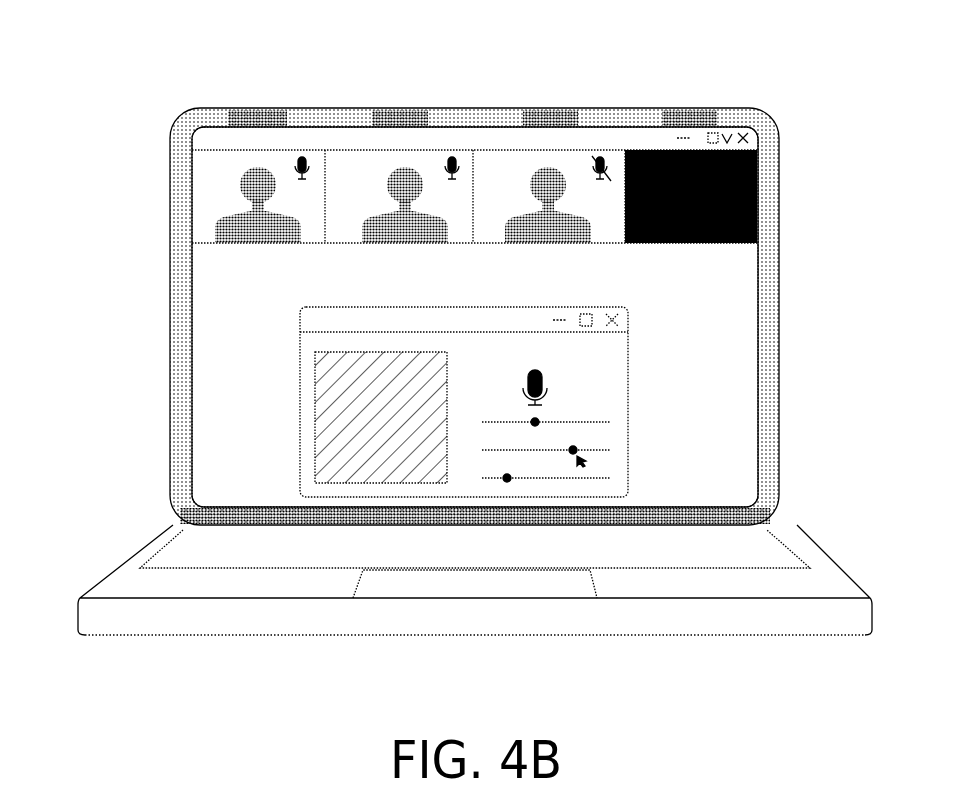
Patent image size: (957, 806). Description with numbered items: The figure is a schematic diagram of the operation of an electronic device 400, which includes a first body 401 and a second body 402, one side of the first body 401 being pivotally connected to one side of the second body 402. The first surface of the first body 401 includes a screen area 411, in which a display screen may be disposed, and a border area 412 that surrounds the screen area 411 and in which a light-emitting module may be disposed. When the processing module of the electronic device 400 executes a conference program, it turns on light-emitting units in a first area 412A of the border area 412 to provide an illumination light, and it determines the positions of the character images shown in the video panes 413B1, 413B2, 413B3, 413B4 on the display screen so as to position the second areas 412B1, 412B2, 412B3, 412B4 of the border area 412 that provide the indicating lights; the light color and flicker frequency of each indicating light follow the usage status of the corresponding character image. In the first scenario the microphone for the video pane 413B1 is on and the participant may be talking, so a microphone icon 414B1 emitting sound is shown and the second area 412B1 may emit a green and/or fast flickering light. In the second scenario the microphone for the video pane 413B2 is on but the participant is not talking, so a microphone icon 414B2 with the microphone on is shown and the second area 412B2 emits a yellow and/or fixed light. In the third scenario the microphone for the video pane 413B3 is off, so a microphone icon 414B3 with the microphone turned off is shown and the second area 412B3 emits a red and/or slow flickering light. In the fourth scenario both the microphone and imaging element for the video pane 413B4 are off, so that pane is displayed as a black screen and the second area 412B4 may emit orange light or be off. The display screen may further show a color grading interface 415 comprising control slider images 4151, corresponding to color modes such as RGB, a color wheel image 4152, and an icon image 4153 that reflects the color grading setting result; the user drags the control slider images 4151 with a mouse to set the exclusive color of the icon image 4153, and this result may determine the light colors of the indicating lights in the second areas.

The electronic device 400 is at (455, 350).
The first body 401 is at (440, 262).
The second body 402 is at (140, 535).
The screen area 411 is at (440, 253).
The border area 412 is at (465, 269).
The first area 412A is at (185, 183).
The second area 412B1 is at (243, 118).
The second area 412B2 is at (393, 118).
The second area 412B3 is at (543, 118).
The second area 412B4 is at (693, 118).
The video pane 413B1 is at (278, 121).
The video pane 413B2 is at (426, 121).
The video pane 413B3 is at (574, 121).
The video pane 413B4 is at (728, 145).
The microphone icon 414B1 is at (303, 153).
The microphone icon 414B2 is at (453, 153).
The microphone icon 414B3 is at (602, 155).
The color grading interface 415 is at (440, 377).
The control slider images 4151 is at (592, 415).
The color wheel image 4152 is at (330, 440).
The icon image 4153 is at (535, 362).